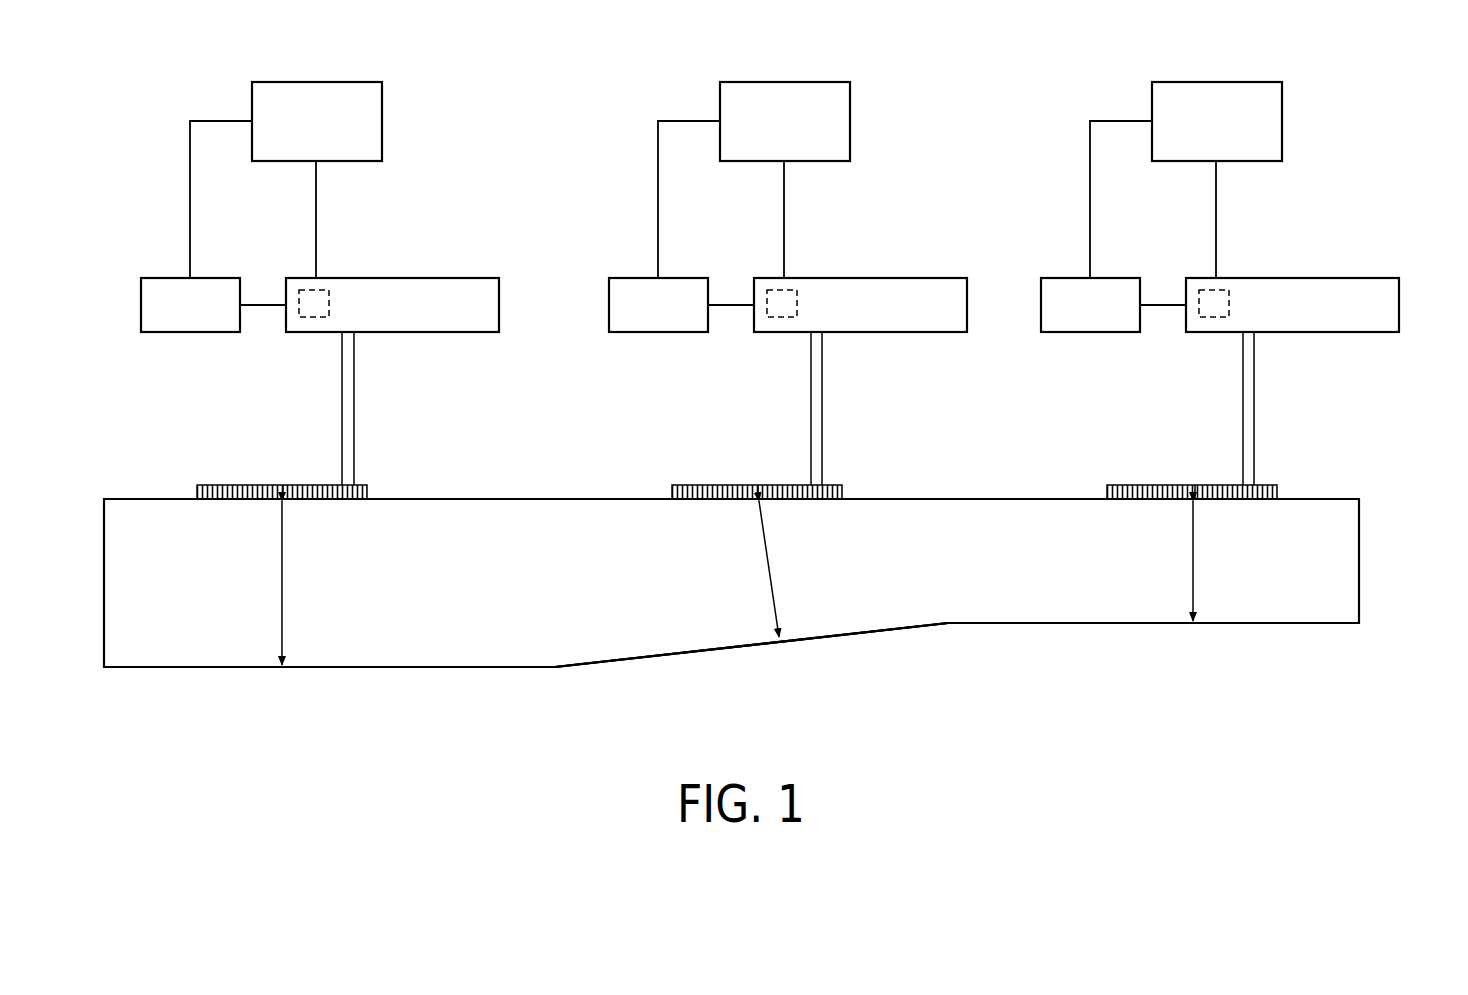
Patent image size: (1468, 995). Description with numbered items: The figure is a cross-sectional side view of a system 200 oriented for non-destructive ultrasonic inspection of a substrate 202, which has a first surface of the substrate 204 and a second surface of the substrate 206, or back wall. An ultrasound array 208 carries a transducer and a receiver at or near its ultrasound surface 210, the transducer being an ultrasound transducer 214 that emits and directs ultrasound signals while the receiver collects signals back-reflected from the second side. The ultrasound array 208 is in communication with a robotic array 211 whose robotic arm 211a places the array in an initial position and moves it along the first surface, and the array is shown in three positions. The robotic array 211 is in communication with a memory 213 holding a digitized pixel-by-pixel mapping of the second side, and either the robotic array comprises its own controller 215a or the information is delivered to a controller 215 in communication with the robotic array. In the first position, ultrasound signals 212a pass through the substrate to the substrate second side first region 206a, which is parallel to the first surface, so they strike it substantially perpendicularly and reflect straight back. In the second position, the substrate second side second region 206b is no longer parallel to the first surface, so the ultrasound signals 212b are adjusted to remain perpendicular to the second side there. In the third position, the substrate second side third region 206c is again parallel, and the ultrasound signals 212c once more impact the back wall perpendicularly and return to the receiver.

The system 200 is at (1349, 477).
The substrate 202 is at (953, 530).
The first surface of the substrate 204 is at (873, 499).
The second surface of the substrate 206 is at (1020, 623).
The substrate second side first region 206a is at (282, 667).
The substrate second side second region 206b is at (781, 641).
The substrate second side third region 206c is at (1193, 623).
The ultrasound array 208 is at (368, 493).
The ultrasound surface 210 is at (210, 500).
The robotic array 211 is at (412, 278).
The robotic arm 211a is at (356, 372).
The ultrasound signals 212a is at (280, 573).
The ultrasound signals 212b is at (772, 557).
The ultrasound signals 212c is at (1195, 556).
The memory 213 is at (167, 278).
The ultrasound transducer 214 is at (283, 490).
The controller 215 is at (382, 119).
The controller 215a is at (304, 287).